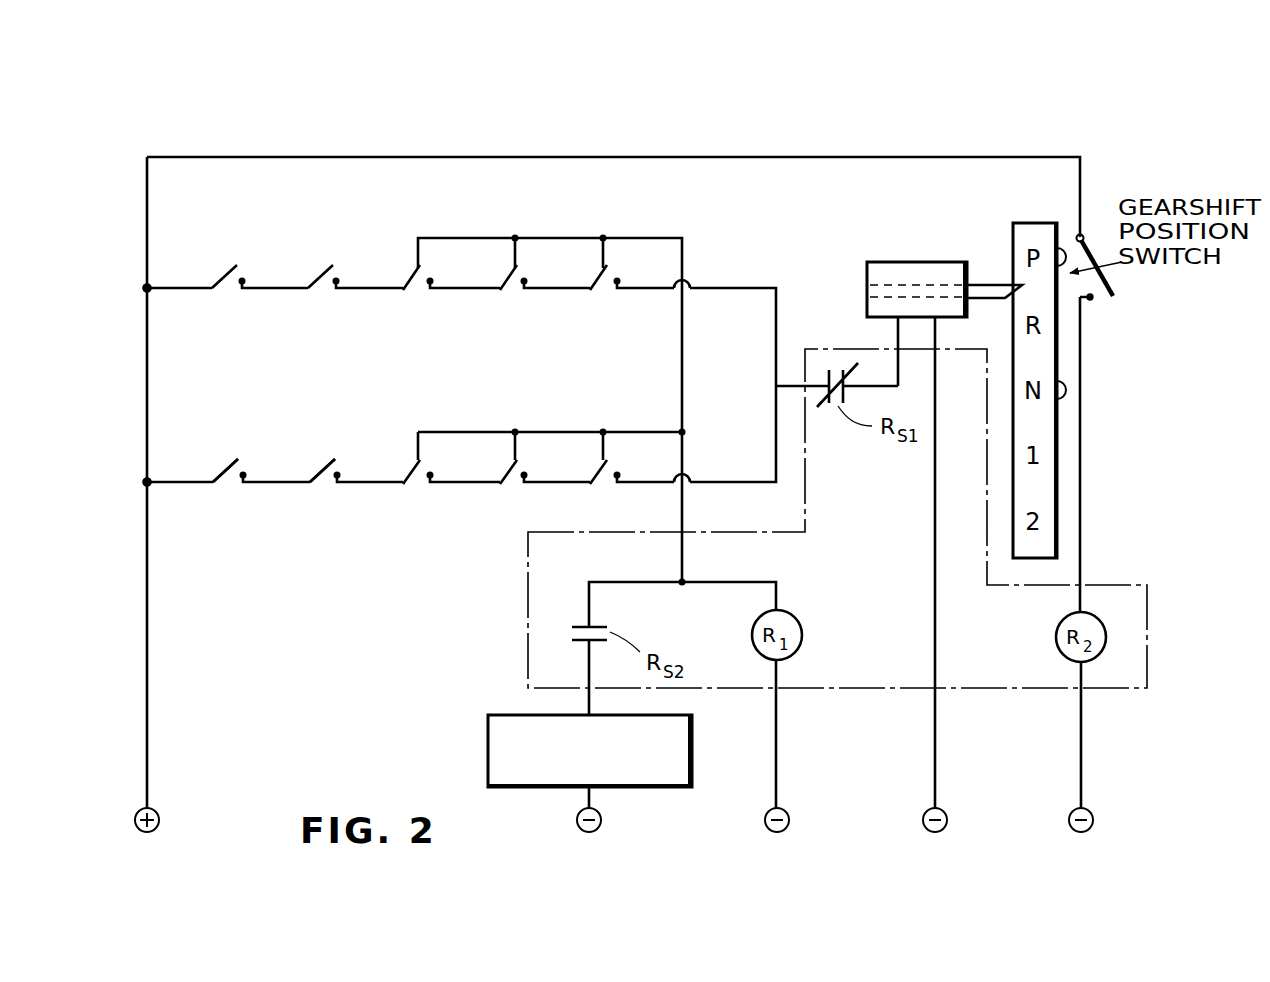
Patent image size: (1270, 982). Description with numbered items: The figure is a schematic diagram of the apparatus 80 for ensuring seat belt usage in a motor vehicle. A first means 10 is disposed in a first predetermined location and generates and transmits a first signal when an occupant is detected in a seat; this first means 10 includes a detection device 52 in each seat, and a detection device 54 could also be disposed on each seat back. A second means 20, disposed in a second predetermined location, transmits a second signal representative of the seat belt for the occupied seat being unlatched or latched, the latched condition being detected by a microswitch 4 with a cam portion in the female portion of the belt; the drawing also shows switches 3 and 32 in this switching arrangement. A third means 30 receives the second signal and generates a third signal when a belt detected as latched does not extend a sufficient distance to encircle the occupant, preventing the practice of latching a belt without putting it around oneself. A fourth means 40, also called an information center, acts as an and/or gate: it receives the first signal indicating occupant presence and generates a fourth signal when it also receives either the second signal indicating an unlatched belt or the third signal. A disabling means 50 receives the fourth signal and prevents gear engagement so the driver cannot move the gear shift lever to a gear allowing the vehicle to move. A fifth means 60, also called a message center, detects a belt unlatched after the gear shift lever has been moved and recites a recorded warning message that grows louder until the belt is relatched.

The apparatus 80 is at (381, 135).
The first means 10 is at (279, 307).
The detection device 52 is at (228, 481).
The detection device 54 is at (327, 481).
The second means 20 is at (471, 263).
The third means 30 is at (632, 260).
The microswitch 4 is at (413, 280).
The switch 3 is at (509, 280).
The switch 32 is at (603, 280).
The disabling means 50 is at (910, 252).
The fourth means 40 is at (1120, 582).
The fifth means 60 is at (486, 737).